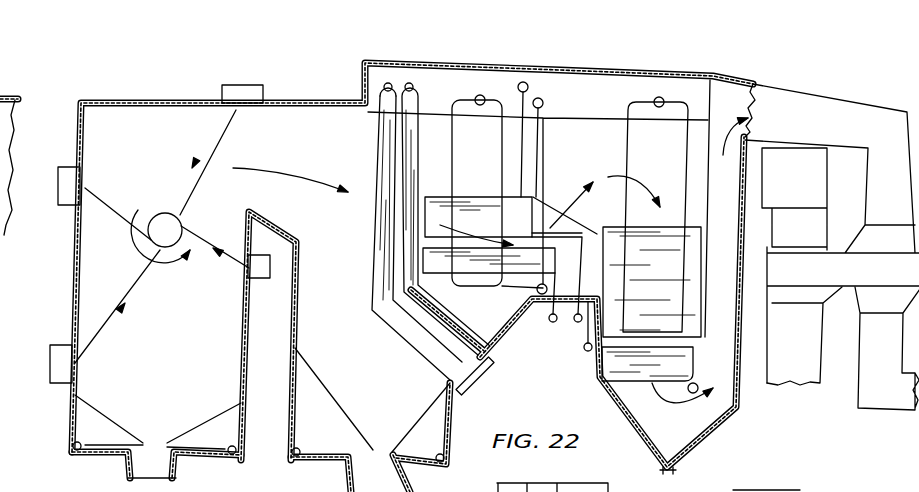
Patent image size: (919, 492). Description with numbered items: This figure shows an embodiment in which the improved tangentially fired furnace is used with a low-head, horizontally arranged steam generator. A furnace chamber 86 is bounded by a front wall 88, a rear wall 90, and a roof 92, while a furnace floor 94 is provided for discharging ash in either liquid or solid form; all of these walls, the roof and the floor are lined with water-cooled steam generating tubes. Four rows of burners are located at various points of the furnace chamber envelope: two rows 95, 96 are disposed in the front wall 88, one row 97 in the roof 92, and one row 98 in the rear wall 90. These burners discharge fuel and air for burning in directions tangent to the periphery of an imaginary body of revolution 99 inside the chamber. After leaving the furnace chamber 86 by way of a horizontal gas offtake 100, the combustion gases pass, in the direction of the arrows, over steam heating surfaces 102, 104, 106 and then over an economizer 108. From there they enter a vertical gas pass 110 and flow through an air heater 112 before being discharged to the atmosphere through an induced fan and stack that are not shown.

The furnace chamber 86 is at (163, 353).
The front wall 88 is at (78, 257).
The rear wall 90 is at (245, 368).
The roof 92 is at (172, 100).
The furnace floor 94 is at (122, 426).
The row of burners 95 is at (68, 167).
The row of burners 96 is at (50, 358).
The row of burners 97 is at (264, 94).
The row of burners 98 is at (272, 268).
The imaginary body of revolution 99 is at (180, 218).
The horizontal gas offtake 100 is at (290, 168).
The steam heating surface 102 is at (373, 180).
The steam heating surface 104 is at (492, 200).
The steam heating surface 106 is at (642, 233).
The economizer 108 is at (610, 363).
The vertical gas pass 110 is at (704, 296).
The air heater 112 is at (832, 247).